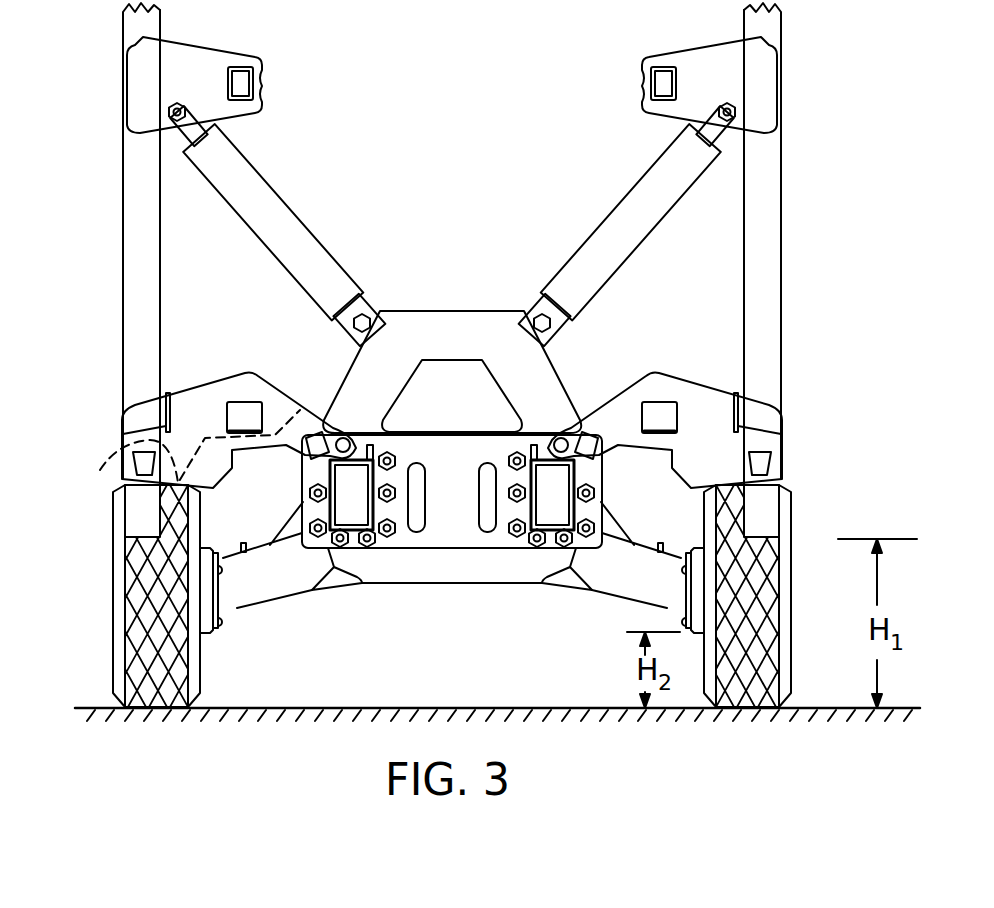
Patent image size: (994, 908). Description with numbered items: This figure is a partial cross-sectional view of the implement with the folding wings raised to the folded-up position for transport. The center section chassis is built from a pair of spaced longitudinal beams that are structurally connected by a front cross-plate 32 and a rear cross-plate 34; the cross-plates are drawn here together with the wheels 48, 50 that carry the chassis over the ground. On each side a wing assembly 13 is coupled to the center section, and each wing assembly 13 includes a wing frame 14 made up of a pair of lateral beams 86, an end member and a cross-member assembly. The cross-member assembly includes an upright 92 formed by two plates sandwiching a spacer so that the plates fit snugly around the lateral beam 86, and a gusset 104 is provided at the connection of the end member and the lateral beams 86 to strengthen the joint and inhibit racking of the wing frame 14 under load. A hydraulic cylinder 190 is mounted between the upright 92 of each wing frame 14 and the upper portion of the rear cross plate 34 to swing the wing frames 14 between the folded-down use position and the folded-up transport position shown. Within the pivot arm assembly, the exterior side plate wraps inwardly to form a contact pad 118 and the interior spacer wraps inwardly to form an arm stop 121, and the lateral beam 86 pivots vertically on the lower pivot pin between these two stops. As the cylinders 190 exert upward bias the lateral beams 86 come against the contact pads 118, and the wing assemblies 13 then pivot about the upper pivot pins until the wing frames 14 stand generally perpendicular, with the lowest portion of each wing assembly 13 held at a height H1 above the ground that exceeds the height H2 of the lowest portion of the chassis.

The wing assembly 13 is at (453, 270).
The lateral beam 86 is at (142, 273).
The wing frame 14 is at (141, 241).
The upright 92 is at (719, 60).
The hydraulic cylinder 190 is at (622, 230).
The rear cross-plate 34 is at (453, 325).
The front cross-plate 32 is at (450, 572).
The gusset 104 is at (420, 407).
The contact pad 118 is at (144, 463).
The arm stop 121 is at (179, 452).
The left wheel 48 is at (188, 685).
The right wheel 50 is at (780, 615).